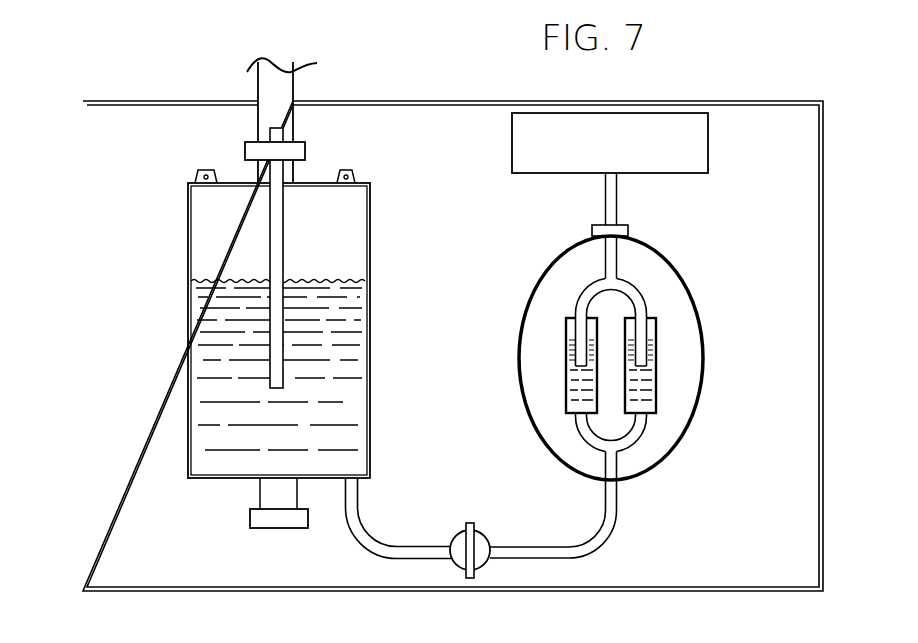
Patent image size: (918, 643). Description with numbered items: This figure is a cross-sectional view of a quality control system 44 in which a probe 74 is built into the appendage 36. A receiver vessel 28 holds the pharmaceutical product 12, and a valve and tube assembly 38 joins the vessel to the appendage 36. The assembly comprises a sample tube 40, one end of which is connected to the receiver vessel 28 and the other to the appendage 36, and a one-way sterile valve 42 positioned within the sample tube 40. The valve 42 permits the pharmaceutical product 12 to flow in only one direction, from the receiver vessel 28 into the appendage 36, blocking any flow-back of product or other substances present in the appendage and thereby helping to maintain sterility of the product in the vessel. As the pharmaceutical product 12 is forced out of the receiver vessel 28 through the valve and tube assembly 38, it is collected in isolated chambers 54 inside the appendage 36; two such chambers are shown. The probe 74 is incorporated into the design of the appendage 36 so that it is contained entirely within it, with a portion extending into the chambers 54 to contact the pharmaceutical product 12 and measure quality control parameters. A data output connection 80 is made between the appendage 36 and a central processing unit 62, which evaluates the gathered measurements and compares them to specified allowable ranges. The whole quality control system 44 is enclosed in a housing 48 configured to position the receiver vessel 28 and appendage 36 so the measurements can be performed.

The pharmaceutical product 12 is at (646, 375).
The receiver vessel 28 is at (315, 182).
The appendage 36 is at (673, 263).
The valve and tube assembly 38 is at (519, 526).
The sample tube 40 is at (362, 522).
The one-way sterile valve 42 is at (471, 523).
The quality control system 44 is at (423, 299).
The housing 48 is at (83, 432).
The chambers 54 is at (566, 332).
The central processing unit 62 is at (512, 137).
The probe 74 is at (575, 293).
The data output connection 80 is at (630, 227).